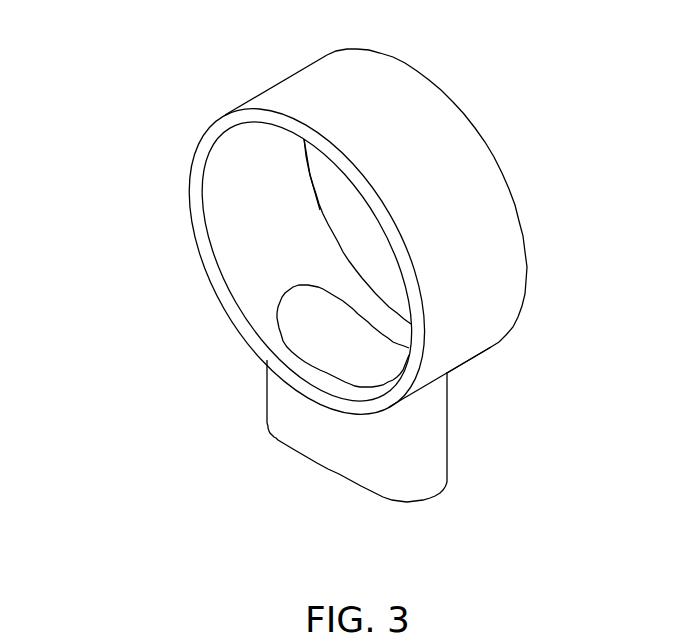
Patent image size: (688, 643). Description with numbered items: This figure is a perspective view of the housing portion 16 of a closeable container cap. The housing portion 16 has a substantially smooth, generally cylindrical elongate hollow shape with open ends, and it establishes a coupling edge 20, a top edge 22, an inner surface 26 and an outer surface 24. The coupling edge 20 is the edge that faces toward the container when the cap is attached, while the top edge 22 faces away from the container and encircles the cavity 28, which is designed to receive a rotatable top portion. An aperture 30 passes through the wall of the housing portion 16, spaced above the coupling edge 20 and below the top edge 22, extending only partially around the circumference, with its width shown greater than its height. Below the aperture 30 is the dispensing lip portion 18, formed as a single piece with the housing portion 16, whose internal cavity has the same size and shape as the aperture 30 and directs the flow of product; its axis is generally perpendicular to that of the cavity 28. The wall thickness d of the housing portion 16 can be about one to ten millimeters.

The housing portion 16 is at (391, 263).
The dispensing lip portion 18 is at (447, 438).
The coupling edge 20 is at (520, 215).
The top edge 22 is at (190, 200).
The outer surface 24 is at (507, 280).
The inner surface 26 is at (227, 240).
The cavity 28 is at (296, 173).
The aperture 30 is at (297, 322).